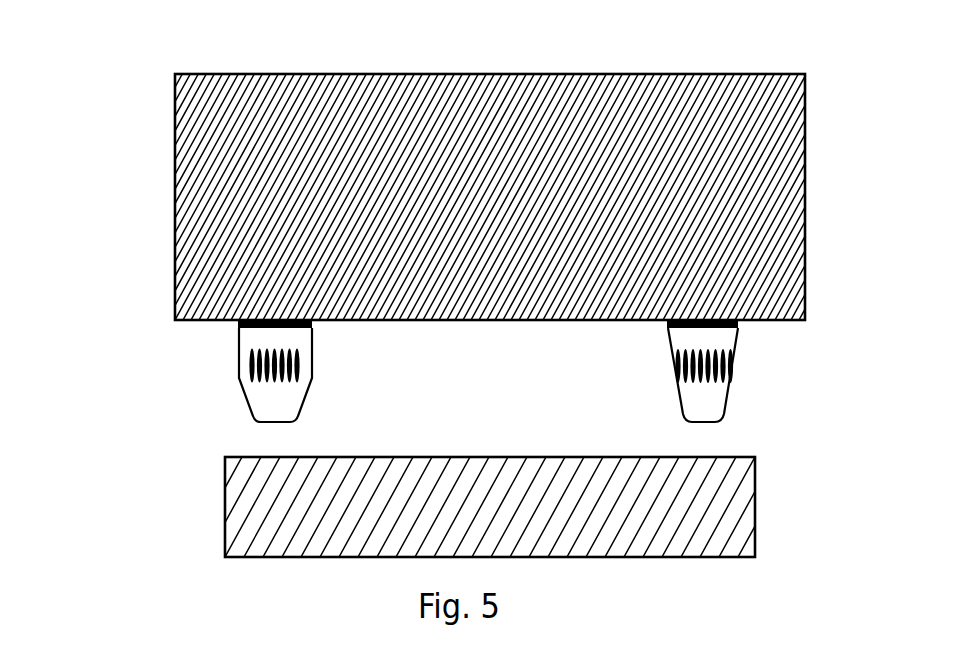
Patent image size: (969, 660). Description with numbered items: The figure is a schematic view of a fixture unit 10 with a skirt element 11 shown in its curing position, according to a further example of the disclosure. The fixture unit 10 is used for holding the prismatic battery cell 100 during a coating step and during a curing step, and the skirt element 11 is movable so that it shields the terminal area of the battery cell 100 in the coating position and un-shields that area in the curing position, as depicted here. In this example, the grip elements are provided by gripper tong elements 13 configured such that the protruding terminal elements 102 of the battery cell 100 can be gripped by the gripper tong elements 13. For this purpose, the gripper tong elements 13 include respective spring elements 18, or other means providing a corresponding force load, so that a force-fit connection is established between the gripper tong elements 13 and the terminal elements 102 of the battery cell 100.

The fixture unit 10 is at (132, 408).
The battery cell 100 is at (127, 113).
The terminal elements 102 is at (238, 338).
The gripper tong elements 13 is at (297, 385).
The spring elements 18 is at (257, 380).
The skirt element 11 is at (755, 510).